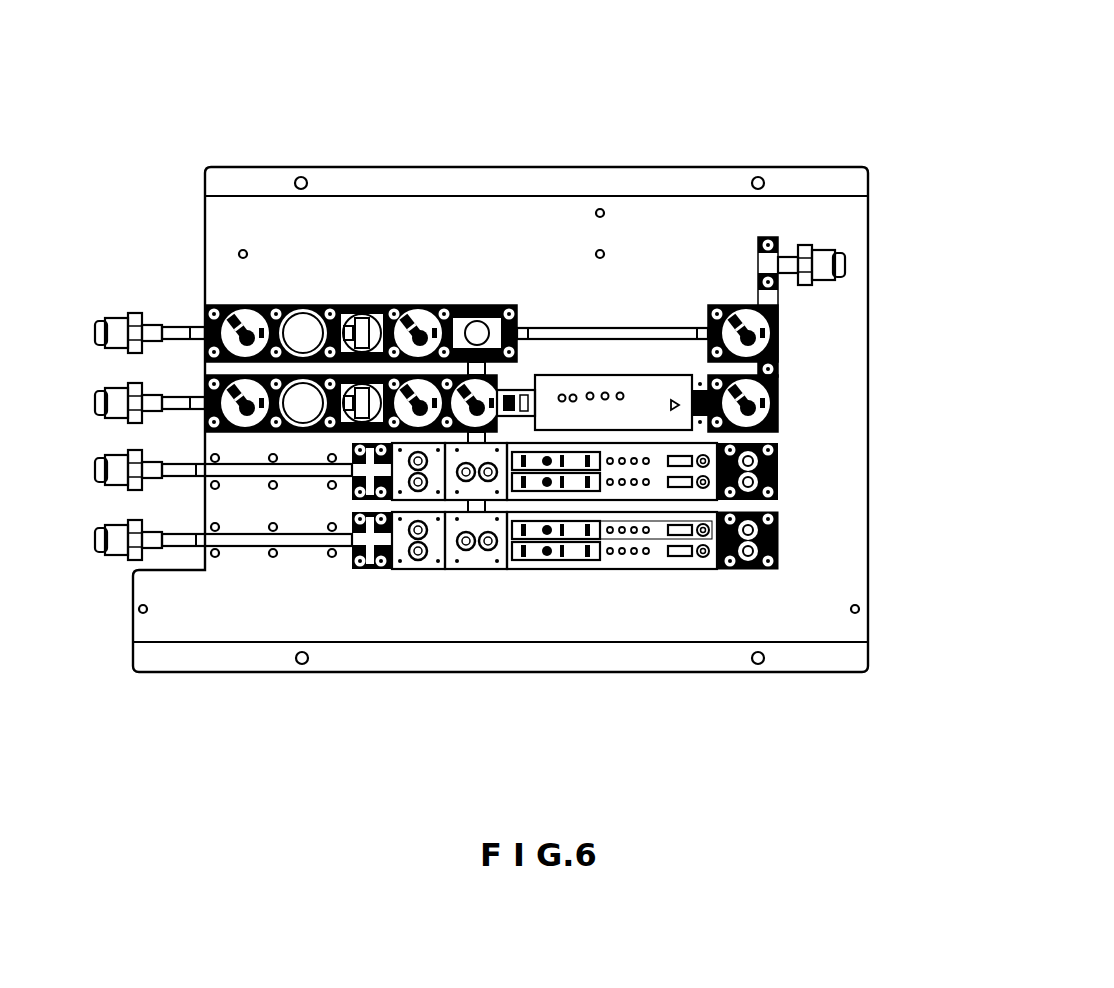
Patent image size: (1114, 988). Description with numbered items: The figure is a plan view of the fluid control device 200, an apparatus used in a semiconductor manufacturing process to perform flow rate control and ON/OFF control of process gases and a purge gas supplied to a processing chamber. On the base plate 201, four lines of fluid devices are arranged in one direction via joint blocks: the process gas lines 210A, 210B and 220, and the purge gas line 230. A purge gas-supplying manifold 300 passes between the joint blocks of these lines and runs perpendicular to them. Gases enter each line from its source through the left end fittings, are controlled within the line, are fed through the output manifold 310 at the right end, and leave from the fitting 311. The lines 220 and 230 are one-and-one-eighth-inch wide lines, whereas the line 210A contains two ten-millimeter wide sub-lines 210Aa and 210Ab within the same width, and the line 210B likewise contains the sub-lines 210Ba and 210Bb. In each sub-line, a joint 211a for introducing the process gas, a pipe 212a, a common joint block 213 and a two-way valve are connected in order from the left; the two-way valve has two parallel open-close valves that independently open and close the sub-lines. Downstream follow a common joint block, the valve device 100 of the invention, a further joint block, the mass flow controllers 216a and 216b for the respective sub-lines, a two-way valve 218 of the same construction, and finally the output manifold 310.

The fluid control device 200 is at (561, 404).
The base plate 201 is at (852, 232).
The output manifold 310 is at (772, 302).
The fitting 311 is at (856, 269).
The purge gas line 230 is at (787, 333).
The process gas line 220 is at (532, 368).
The purge gas-supplying manifold 300 is at (488, 372).
The process gas line 210B is at (590, 473).
The sub-line 210Bb is at (797, 455).
The sub-line 210Ba is at (797, 483).
The process gas line 210A is at (561, 638).
The sub-line 210Ab is at (792, 531).
The sub-line 210Aa is at (792, 557).
The joint 211a is at (115, 554).
The pipe 212a is at (253, 562).
The common joint block 213 is at (414, 565).
The valve device 100 is at (480, 576).
The mass flow controller 216a is at (609, 556).
The mass flow controller 216b is at (653, 534).
The two-way valve 218 is at (747, 570).